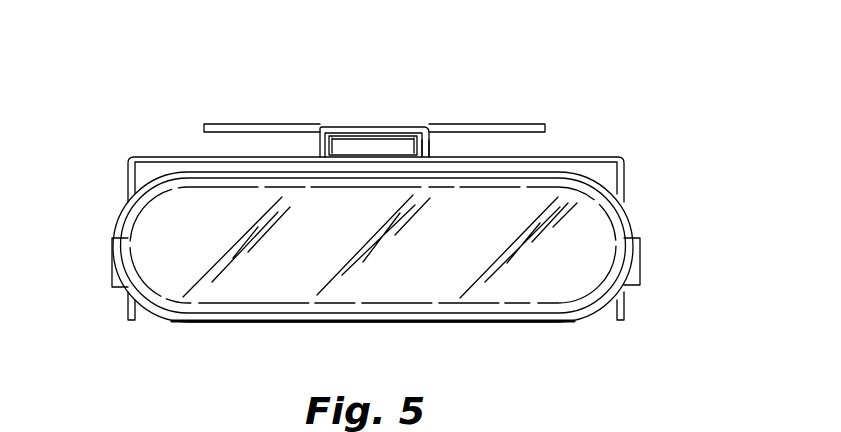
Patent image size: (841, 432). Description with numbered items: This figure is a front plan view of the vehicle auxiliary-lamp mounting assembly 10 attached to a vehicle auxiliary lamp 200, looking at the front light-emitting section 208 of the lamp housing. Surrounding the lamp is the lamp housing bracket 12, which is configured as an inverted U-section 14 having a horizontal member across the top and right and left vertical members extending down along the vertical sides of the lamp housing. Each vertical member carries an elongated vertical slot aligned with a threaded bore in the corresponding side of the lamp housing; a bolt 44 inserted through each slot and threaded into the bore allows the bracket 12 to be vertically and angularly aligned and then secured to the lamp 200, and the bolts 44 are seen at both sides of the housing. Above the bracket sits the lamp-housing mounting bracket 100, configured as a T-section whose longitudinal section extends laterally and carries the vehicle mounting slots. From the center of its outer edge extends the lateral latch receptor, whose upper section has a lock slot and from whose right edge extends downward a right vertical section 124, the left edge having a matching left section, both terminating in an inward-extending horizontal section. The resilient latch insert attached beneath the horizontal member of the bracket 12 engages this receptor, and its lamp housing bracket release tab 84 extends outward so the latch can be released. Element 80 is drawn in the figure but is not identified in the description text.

The assembly 10 is at (670, 65).
The lamp housing bracket 12 is at (557, 160).
The inverted U-section 14 is at (622, 190).
The bolt 44 is at (112, 270).
The connector shell 80 is at (341, 142).
The lamp housing bracket release tab 84 is at (363, 136).
The lamp-housing mounting bracket 100 is at (517, 126).
The right vertical section 124 is at (432, 148).
The vehicle auxiliary lamp 200 is at (597, 214).
The front light-emitting section 208 is at (597, 214).